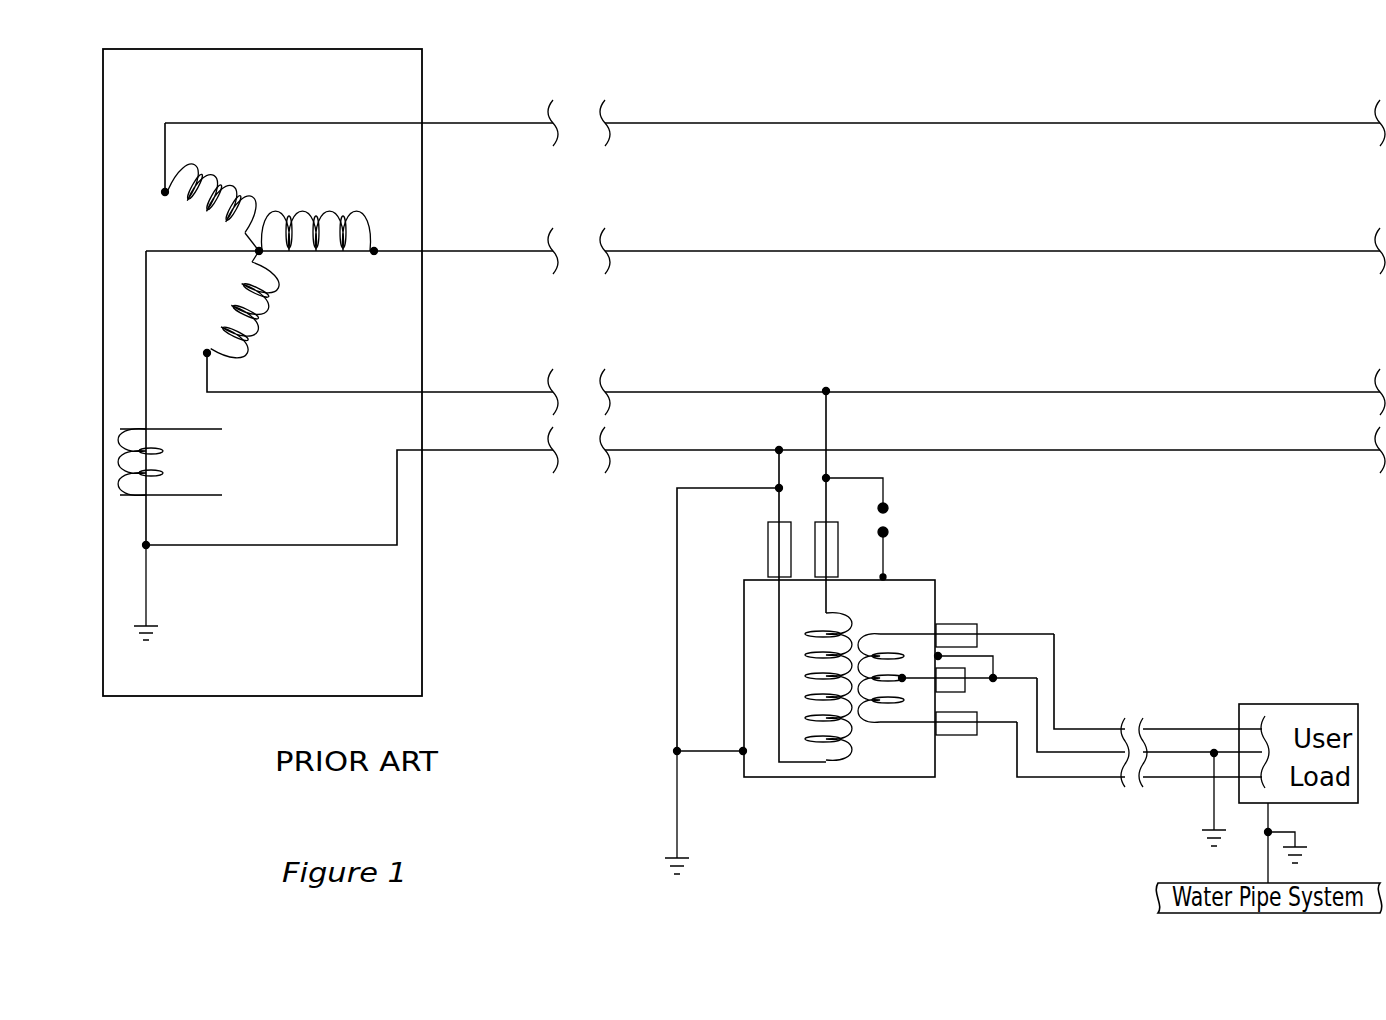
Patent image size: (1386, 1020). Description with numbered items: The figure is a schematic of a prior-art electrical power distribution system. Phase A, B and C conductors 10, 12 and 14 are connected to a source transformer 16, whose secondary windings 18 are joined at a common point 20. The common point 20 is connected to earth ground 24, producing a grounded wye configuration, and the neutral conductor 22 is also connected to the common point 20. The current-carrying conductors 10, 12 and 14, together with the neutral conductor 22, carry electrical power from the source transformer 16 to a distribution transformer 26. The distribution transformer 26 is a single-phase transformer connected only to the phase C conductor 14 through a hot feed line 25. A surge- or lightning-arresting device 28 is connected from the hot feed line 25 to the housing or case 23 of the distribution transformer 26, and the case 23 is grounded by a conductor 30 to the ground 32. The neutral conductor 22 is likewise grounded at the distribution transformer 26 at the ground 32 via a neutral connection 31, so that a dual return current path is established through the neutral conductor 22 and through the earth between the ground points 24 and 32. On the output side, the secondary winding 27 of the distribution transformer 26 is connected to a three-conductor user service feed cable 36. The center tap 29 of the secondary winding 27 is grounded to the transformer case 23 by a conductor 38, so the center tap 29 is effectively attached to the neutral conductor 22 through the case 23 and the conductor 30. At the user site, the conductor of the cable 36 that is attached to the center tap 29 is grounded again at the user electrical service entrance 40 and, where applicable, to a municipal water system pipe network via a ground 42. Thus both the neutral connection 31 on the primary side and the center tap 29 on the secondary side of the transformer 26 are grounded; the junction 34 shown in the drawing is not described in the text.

The phase A conductor 10 is at (492, 123).
The phase B conductor 12 is at (492, 251).
The phase C conductor 14 is at (492, 392).
The source transformer 16 is at (262, 372).
The secondary windings 18 is at (235, 190).
The common point 20 is at (257, 254).
The neutral conductor 22 is at (457, 452).
The housing or case 23 is at (937, 588).
The earth ground 24 is at (148, 626).
The hot feed line 25 is at (826, 425).
The distribution transformer 26 is at (810, 808).
The secondary winding 27 is at (885, 725).
The surge- or lightning-arresting device 28 is at (888, 523).
The center tap 29 is at (904, 681).
The conductor 30 is at (705, 755).
The neutral connection 31 is at (777, 485).
The ground 32 is at (670, 855).
The neutral junction 34 is at (677, 751).
The three-conductor user service feed cable 36 is at (1082, 716).
The conductor 38 is at (990, 655).
The user electrical service entrance 40 is at (1212, 827).
The ground 42 is at (1295, 841).